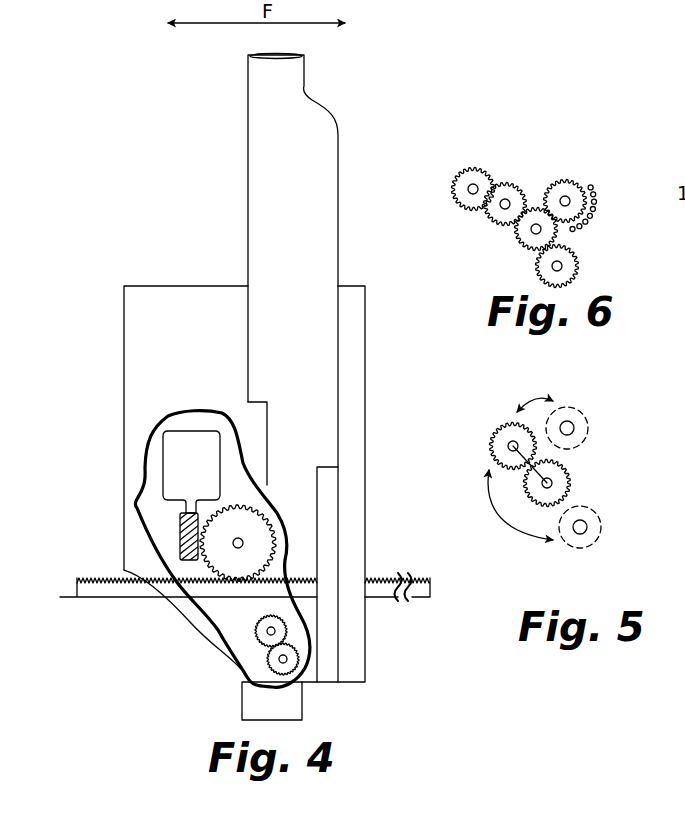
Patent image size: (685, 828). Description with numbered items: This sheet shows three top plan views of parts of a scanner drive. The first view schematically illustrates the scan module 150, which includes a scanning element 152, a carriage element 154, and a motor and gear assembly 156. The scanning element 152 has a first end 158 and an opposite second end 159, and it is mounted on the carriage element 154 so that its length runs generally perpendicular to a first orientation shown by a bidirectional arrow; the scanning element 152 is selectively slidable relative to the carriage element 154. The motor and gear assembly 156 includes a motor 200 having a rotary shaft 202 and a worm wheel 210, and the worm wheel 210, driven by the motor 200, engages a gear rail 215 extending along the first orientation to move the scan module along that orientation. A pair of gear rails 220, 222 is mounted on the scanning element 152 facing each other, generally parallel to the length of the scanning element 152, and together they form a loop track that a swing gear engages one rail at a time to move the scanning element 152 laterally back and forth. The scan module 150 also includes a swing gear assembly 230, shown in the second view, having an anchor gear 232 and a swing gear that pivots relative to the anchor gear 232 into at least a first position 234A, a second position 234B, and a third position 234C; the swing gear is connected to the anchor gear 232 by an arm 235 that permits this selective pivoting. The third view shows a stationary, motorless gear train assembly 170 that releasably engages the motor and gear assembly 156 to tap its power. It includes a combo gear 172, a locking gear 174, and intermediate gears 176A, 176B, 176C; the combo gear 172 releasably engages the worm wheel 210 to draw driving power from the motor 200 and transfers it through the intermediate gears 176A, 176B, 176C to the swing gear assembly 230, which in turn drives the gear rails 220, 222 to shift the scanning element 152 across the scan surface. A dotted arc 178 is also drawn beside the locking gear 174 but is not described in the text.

In FIG. 4, the scan module 150 is at (172, 283).
In FIG. 4, the scanning element 152 is at (246, 168).
In FIG. 4, the carriage element 154 is at (138, 323).
In FIG. 4, the motor and gear assembly 156 is at (161, 462).
In FIG. 4, the first end 158 is at (250, 55).
In FIG. 4, the second end 159 is at (290, 708).
In FIG. 4, the motor 200 is at (186, 434).
In FIG. 4, the rotary shaft 202 is at (178, 533).
In FIG. 4, the worm wheel 210 is at (220, 555).
In FIG. 4, the gear rail 215 is at (85, 588).
In FIG. 4, the gear rail 220 is at (322, 482).
In FIG. 4, the gear rail 222 is at (262, 417).
In FIG. 4, the swing gear assembly 230 is at (257, 659).
In FIG. 5, the swing gear assembly 230 is at (601, 433).
In FIG. 6, the gear train assembly 170 is at (509, 166).
In FIG. 6, the combo gear 172 is at (452, 188).
In FIG. 6, the locking gear 174 is at (557, 180).
In FIG. 6, the intermediate gear 176A is at (485, 215).
In FIG. 6, the intermediate gear 176B is at (525, 242).
In FIG. 6, the intermediate gear 176C is at (575, 265).
In FIG. 6, the dotted arc 178 is at (597, 200).
In FIG. 5, the anchor gear 232 is at (563, 468).
In FIG. 5, the first position 234A is at (507, 440).
In FIG. 5, the second position 234B is at (580, 542).
In FIG. 5, the third position 234C is at (567, 410).
In FIG. 5, the arm 235 is at (497, 458).